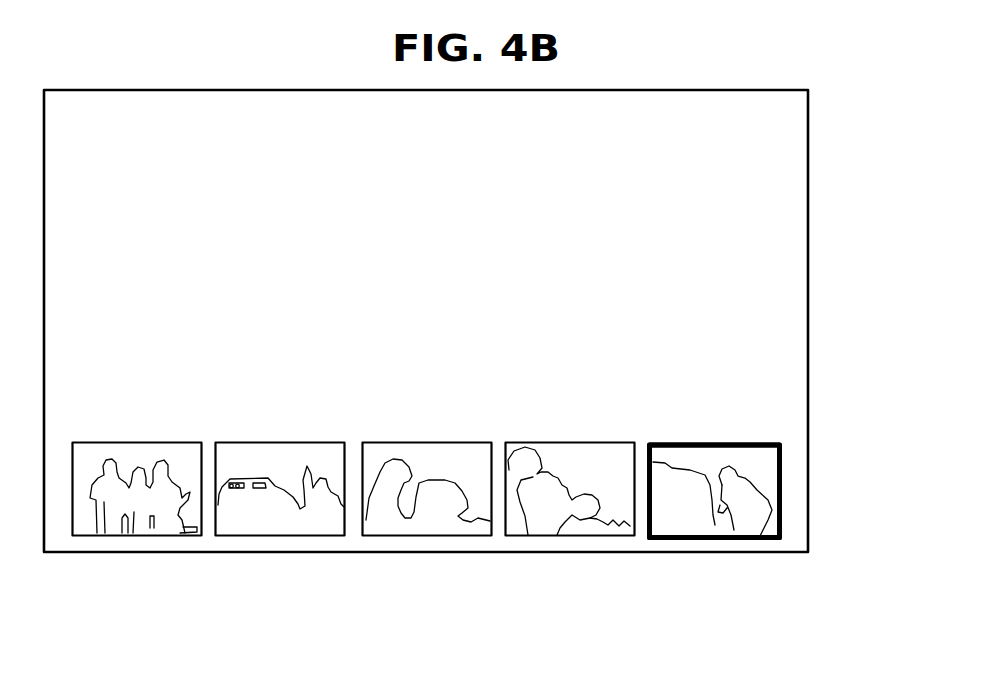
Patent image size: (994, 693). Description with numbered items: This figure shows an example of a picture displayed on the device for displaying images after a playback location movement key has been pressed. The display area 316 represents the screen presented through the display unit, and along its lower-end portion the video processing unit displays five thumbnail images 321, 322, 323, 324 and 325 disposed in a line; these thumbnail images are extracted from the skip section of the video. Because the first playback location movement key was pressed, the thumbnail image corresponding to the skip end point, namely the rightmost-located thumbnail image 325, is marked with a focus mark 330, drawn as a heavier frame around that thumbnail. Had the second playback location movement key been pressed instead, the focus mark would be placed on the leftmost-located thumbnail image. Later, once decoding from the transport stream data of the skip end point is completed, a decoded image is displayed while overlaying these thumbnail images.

The display screen 316 is at (793, 281).
The thumbnail image 321 is at (148, 516).
The thumbnail image 322 is at (293, 518).
The thumbnail image 323 is at (433, 518).
The thumbnail image 324 is at (563, 522).
The thumbnail image 325 is at (720, 519).
The selection highlight frame 330 is at (778, 442).